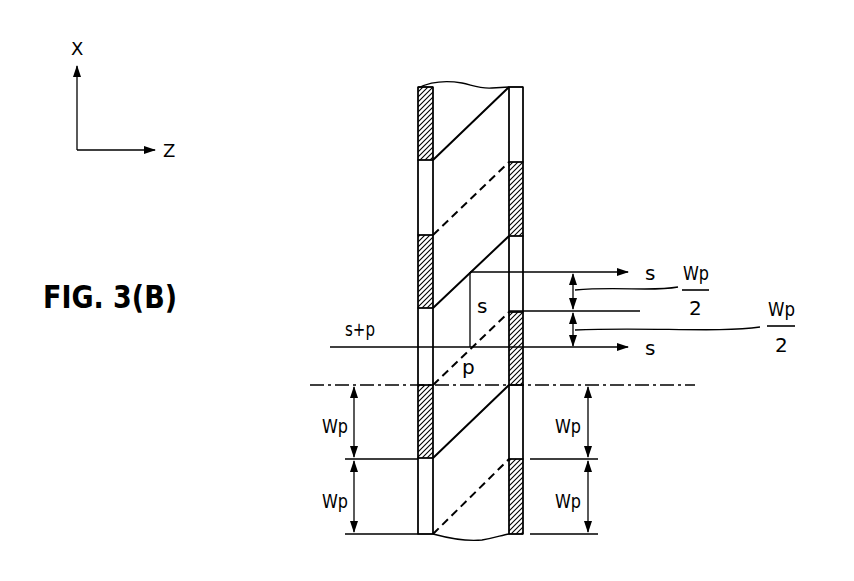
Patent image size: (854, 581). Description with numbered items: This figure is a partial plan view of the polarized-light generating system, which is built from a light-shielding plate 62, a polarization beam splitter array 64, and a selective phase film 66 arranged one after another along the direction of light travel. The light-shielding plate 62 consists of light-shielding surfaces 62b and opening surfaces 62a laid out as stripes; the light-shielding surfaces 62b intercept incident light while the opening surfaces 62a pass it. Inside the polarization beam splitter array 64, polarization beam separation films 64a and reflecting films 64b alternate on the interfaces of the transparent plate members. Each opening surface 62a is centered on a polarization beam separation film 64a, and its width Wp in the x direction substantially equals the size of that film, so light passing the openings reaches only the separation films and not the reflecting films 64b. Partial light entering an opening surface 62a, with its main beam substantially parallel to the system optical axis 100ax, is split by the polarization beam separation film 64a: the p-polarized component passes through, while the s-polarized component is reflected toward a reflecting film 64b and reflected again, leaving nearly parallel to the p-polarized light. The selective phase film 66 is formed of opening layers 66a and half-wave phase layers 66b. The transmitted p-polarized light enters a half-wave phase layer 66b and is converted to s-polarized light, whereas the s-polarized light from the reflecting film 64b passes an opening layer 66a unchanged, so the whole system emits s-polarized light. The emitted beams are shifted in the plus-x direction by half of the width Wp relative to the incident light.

The light-shielding plate 62 is at (391, 277).
The opening surface 62a is at (418, 178).
The light-shielding surface 62b is at (418, 128).
The polarization beam splitter array 64 is at (404, 277).
The polarization beam separation film 64a is at (461, 207).
The reflecting film 64b is at (481, 111).
The selective phase film 66 is at (555, 277).
The opening layer 66a is at (523, 118).
The λ/2 phase layer 66b is at (523, 190).
The system optical axis 100ax is at (666, 386).